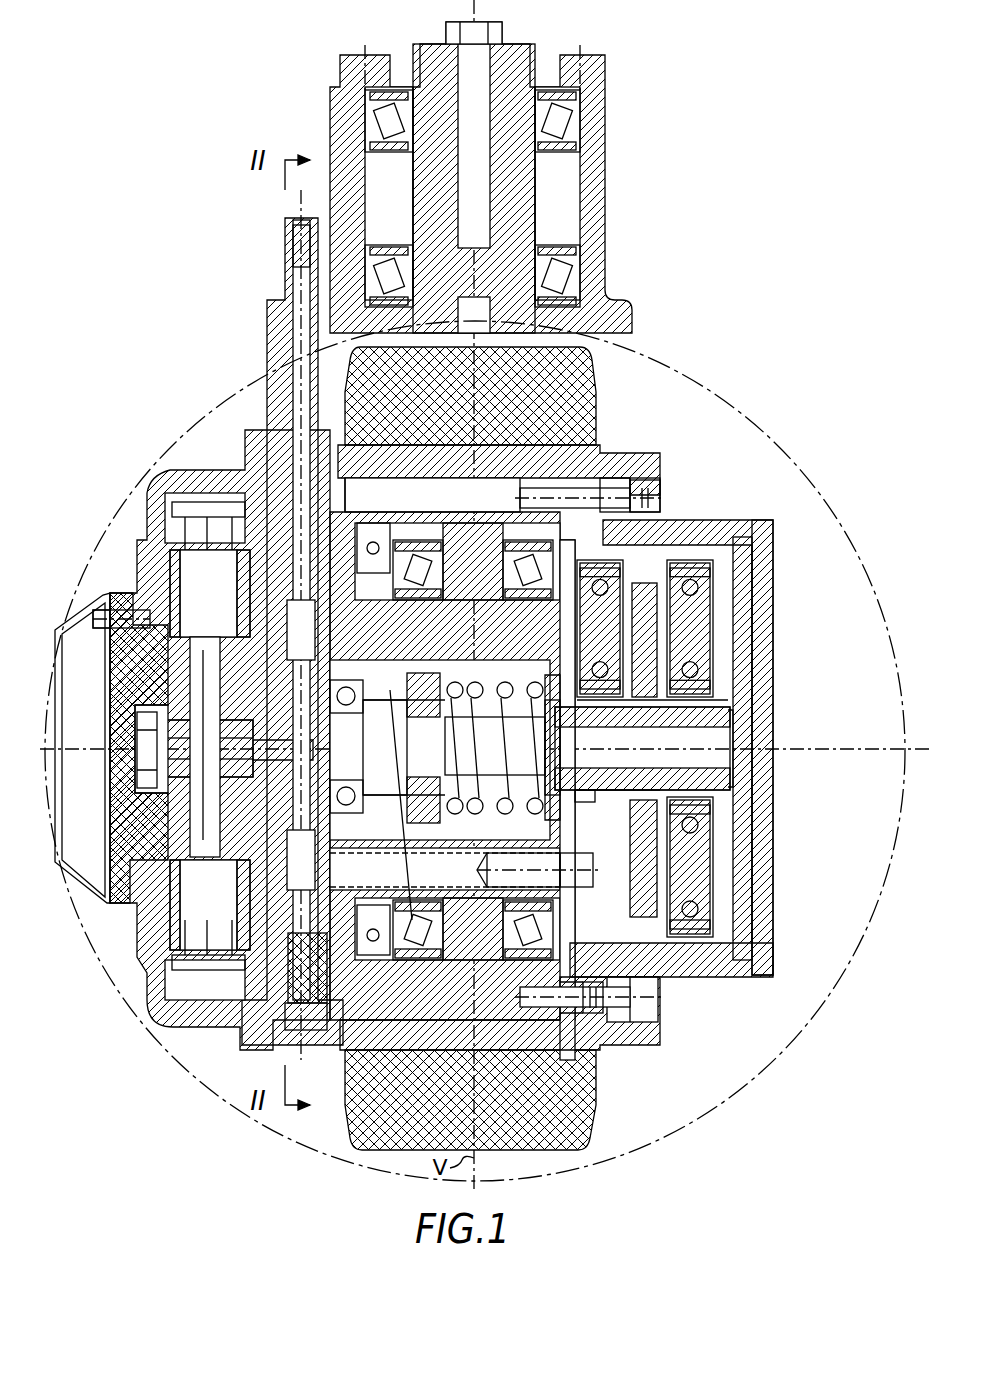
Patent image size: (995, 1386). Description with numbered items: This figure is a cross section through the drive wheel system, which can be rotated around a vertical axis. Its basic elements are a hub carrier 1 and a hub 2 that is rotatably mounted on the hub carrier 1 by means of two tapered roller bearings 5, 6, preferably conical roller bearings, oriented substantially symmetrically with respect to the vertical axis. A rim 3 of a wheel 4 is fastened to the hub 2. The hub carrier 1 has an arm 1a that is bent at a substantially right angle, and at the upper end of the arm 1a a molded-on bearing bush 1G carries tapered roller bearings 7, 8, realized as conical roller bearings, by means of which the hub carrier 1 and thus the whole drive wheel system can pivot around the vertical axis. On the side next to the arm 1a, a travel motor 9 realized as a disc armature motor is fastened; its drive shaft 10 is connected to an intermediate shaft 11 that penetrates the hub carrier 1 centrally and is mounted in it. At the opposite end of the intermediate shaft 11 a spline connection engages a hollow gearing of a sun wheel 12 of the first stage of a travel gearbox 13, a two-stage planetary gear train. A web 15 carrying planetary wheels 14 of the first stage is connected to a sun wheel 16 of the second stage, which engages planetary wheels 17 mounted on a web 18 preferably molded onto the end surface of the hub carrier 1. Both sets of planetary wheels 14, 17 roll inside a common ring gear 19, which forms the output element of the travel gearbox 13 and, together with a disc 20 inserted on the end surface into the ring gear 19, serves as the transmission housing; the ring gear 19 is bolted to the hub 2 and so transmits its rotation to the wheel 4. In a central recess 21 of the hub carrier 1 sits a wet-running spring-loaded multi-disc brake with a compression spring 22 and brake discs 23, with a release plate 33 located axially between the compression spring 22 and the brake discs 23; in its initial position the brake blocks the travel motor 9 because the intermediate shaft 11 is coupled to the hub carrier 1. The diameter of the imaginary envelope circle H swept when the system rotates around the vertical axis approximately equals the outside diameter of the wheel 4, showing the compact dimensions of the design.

The hub carrier 1 is at (387, 745).
The upper housing 1G is at (590, 172).
The arm 1a is at (268, 352).
The hub 2 is at (428, 522).
The rim 3 is at (588, 458).
The wheel 4 is at (585, 388).
The tapered roller bearing 5 is at (420, 895).
The tapered roller bearing 6 is at (558, 945).
The tapered roller bearing 7 is at (555, 283).
The tapered roller bearing 8 is at (560, 118).
The travel motor 9 is at (200, 1055).
The drive shaft 10 is at (111, 748).
The intermediate shaft 11 is at (340, 748).
The sun wheel 12 is at (732, 748).
The travel gearbox 13 is at (722, 515).
The planetary wheels 14 is at (685, 948).
The web 15 is at (668, 878).
The sun wheel 16 is at (612, 782).
The planetary wheels 17 is at (628, 565).
The web 18 is at (604, 640).
The ring gear 19 is at (735, 528).
The disc 20 is at (755, 620).
The central recess 21 is at (492, 880).
The compression spring 22 is at (505, 795).
The brake discs 23 is at (392, 690).
The release plate 33 is at (462, 678).
The envelope circle H is at (688, 352).